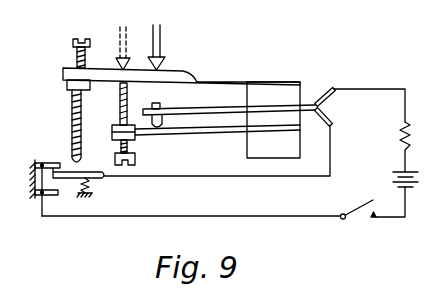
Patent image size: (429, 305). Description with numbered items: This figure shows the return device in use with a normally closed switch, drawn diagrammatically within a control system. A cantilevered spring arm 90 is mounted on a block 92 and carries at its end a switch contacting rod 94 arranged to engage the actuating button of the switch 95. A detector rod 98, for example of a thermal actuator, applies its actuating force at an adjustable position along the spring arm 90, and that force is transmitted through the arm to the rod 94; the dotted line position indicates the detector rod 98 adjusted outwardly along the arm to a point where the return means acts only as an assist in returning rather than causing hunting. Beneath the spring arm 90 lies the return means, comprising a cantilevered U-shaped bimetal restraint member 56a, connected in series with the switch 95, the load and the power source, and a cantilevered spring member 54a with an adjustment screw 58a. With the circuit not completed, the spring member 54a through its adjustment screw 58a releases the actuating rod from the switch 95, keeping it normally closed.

The cantilevered spring arm 90 is at (195, 73).
The block 92 is at (330, 72).
The switch contacting rod 94 is at (70, 117).
The switch 95 is at (50, 202).
The detector rod 98 is at (161, 44).
The cantilevered spring member 54a is at (244, 128).
The restraint member 56a is at (202, 116).
The adjustment screw 58a is at (118, 146).